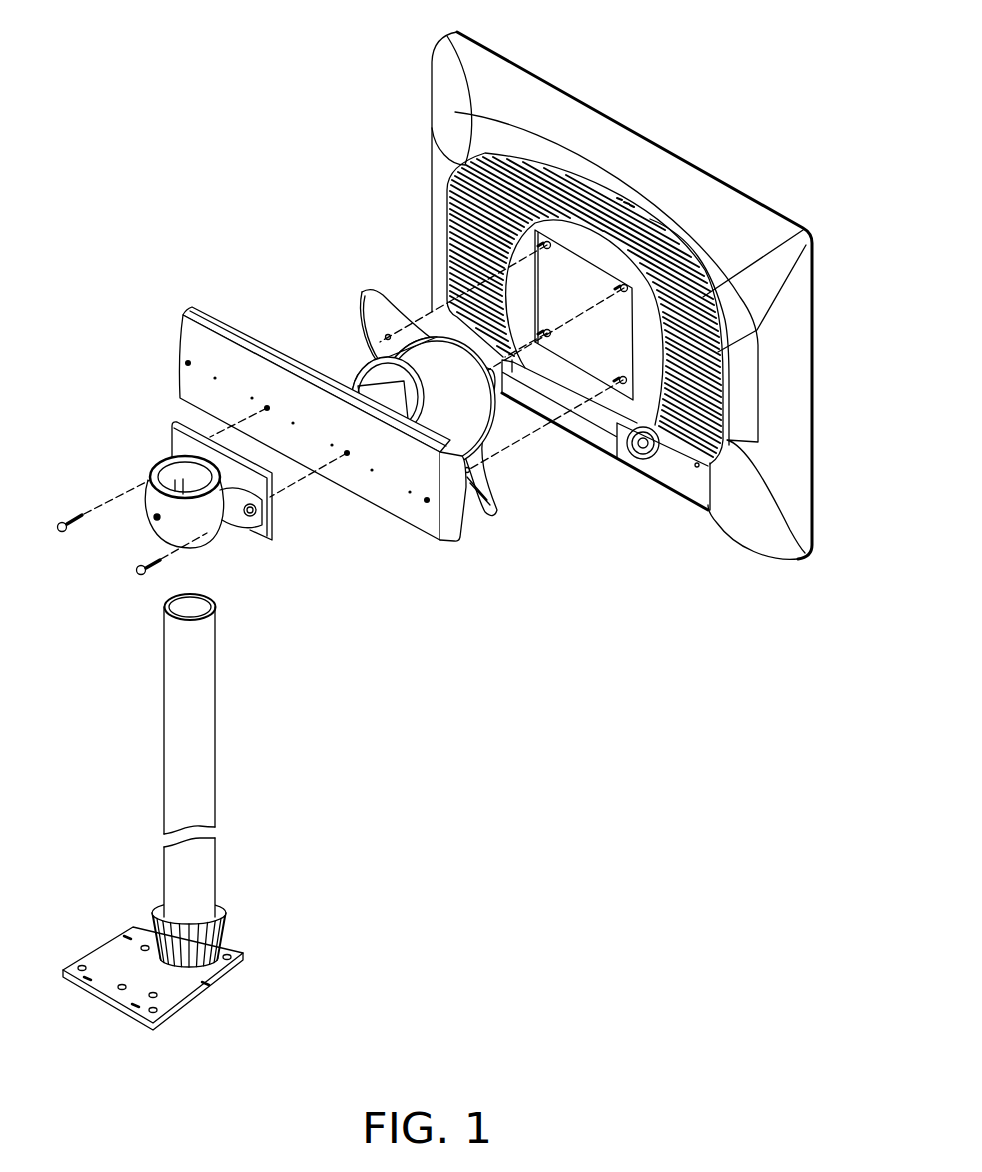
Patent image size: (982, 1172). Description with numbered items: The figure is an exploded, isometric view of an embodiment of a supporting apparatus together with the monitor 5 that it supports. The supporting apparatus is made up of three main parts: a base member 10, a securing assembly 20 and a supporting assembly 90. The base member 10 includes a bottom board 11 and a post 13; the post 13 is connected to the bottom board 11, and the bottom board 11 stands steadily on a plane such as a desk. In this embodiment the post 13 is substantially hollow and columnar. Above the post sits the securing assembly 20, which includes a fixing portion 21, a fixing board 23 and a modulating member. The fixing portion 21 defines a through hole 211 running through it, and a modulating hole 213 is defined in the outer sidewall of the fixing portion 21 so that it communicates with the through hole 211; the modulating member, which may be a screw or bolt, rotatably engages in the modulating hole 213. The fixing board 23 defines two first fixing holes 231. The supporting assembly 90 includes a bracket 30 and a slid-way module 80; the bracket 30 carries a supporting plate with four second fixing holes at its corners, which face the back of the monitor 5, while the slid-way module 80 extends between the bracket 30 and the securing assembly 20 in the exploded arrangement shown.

The monitor 5 is at (622, 147).
The base member 10 is at (210, 812).
The bottom board 11 is at (183, 983).
The post 13 is at (224, 780).
The securing assembly 20 is at (203, 525).
The fixing portion 21 is at (171, 516).
The through hole 211 is at (177, 477).
The modulating hole 213 is at (155, 518).
The fixing board 23 is at (259, 499).
The first fixing holes 231 is at (257, 510).
The bracket 30 is at (483, 497).
The slid-way module 80 is at (450, 517).
The supporting assembly 90 is at (399, 446).